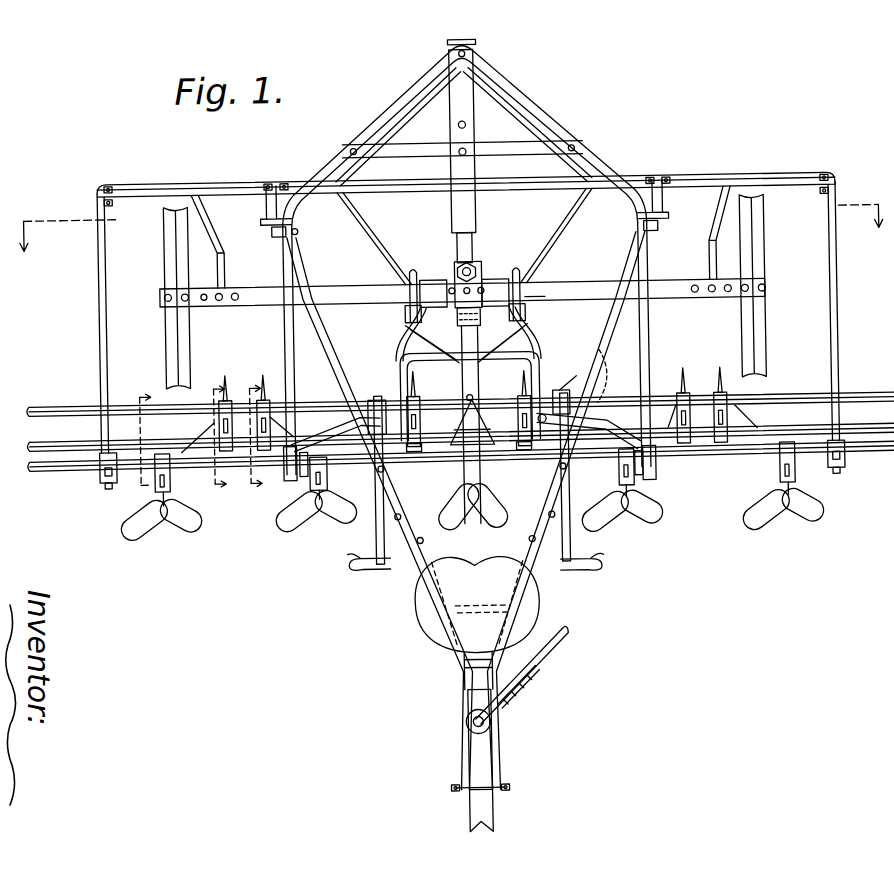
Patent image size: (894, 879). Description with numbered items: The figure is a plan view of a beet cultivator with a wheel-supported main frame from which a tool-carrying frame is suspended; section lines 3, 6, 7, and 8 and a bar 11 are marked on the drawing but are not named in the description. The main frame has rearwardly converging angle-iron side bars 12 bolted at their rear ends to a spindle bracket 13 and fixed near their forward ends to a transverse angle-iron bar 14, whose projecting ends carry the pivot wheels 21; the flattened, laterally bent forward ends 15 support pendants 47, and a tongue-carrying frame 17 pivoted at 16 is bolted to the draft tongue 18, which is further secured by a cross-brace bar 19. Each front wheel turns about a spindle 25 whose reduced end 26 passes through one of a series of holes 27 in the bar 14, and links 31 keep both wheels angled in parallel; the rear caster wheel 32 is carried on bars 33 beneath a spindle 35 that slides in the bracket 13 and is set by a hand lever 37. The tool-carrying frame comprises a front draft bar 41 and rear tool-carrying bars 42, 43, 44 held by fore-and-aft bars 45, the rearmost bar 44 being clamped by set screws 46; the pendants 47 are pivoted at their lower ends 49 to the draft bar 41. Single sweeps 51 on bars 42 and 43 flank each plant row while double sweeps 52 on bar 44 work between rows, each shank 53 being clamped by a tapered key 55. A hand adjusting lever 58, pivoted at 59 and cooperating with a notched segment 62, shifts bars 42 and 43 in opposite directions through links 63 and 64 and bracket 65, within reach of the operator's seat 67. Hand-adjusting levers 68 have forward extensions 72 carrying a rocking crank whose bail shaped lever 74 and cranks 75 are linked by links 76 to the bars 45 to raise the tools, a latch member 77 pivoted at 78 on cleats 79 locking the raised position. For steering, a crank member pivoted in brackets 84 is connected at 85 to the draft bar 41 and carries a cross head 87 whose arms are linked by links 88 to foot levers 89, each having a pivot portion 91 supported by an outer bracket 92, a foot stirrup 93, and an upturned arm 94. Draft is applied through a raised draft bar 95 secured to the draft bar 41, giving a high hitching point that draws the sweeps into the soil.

The section line 3- 3 is at (451, 237).
The section line 6- 6 is at (138, 441).
The section line 7- 7 is at (211, 433).
The section line 8- 8 is at (249, 432).
The transverse frame bar 11 is at (336, 290).
The angle-iron side bars 12 is at (438, 658).
The spindle bracket 13 is at (461, 700).
The transverse angle-iron bar 14 is at (674, 290).
The forward ends of side bars 15 is at (268, 219).
The pivotal attachment 16 is at (300, 229).
The tongue-carrying frame 17 is at (376, 120).
The draft tongue 18 is at (478, 68).
The cross-brace bar 19 is at (480, 135).
The pivot wheels 21 is at (177, 236).
The spindle 25 is at (204, 289).
The reduced end of spindle 26 is at (727, 297).
The transversely spaced holes 27 is at (235, 298).
The links 31 is at (222, 262).
The rear supporting wheel 32 is at (484, 812).
The bars 33 is at (462, 757).
The spindle 35 is at (511, 680).
The hand lever 37 is at (563, 650).
The front transverse draft bar 41 is at (148, 183).
The forward tool-carrying bar 42 is at (27, 403).
The intermediate tool-carrying bar 43 is at (27, 439).
The rearmost tool-carrying bar 44 is at (27, 460).
The fore-and-aft bars 45 is at (99, 273).
The set screws 46 is at (105, 484).
The pendants 47 is at (270, 184).
The lower ends of pendants 49 is at (286, 181).
The single sweeps 51 is at (205, 412).
The double sweeps 52 is at (172, 520).
The shank 53 is at (730, 421).
The tapered key 55 is at (689, 420).
The hand adjusting lever 58 is at (470, 510).
The pivot 59 is at (460, 398).
The notched segment 62 is at (458, 448).
The link 63 is at (560, 390).
The link 64 is at (380, 399).
The bracket 65 is at (370, 468).
The operator's seat 67 is at (477, 623).
The hand-adjusting levers 68 is at (372, 569).
The forward extension 72 is at (567, 452).
The bail shaped lever 74 is at (405, 355).
The cranks 75 is at (318, 436).
The links 76 is at (287, 478).
The latch member 77 is at (528, 340).
The latch pivot 78 is at (458, 312).
The cleats or brackets 79 is at (436, 280).
The brackets 84 is at (476, 268).
The pivotal connection 85 is at (458, 248).
The cross head 87 is at (412, 268).
The links 88 is at (407, 284).
The foot levers 89 is at (414, 390).
The pivot portion of foot lever 91 is at (428, 323).
The outer bracket 92 is at (398, 363).
The foot stirrup 93 is at (412, 452).
The arm 94 is at (528, 301).
The draft bar 95 is at (512, 115).